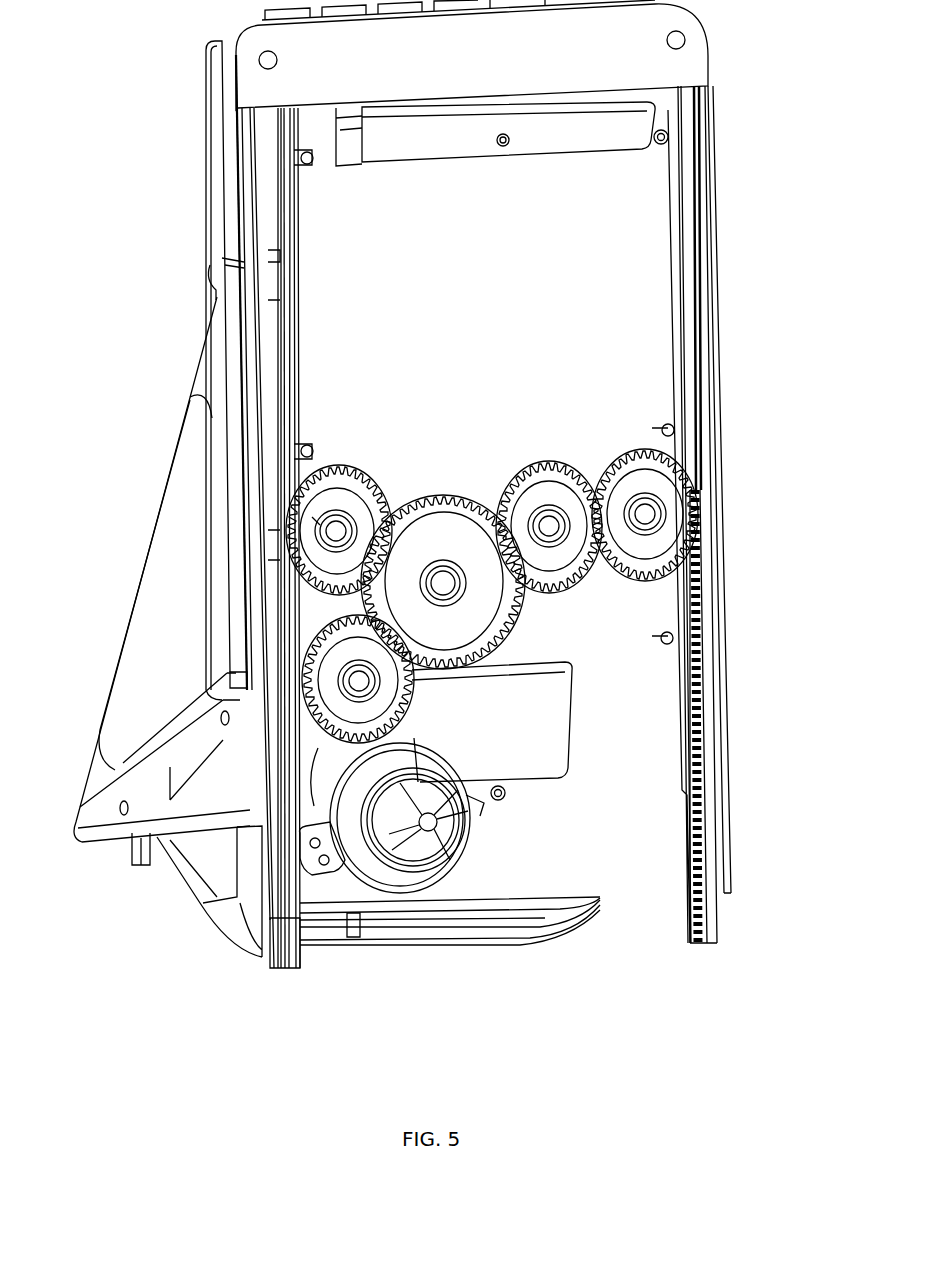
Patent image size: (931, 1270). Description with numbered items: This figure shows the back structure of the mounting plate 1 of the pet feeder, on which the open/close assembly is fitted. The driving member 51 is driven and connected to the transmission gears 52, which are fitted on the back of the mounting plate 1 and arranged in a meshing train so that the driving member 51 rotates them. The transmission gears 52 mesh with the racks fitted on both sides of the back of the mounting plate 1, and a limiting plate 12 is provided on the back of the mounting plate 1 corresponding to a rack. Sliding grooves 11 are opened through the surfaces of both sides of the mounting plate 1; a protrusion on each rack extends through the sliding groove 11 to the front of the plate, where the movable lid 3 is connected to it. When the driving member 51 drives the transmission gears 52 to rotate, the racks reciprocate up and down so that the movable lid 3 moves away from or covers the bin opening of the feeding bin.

The mounting plate 1 is at (587, 348).
The movable lid 3 is at (706, 612).
The sliding groove 11 is at (272, 395).
The limiting plate 12 is at (293, 203).
The driving member 51 is at (352, 846).
The transmission gear 52 is at (305, 500).